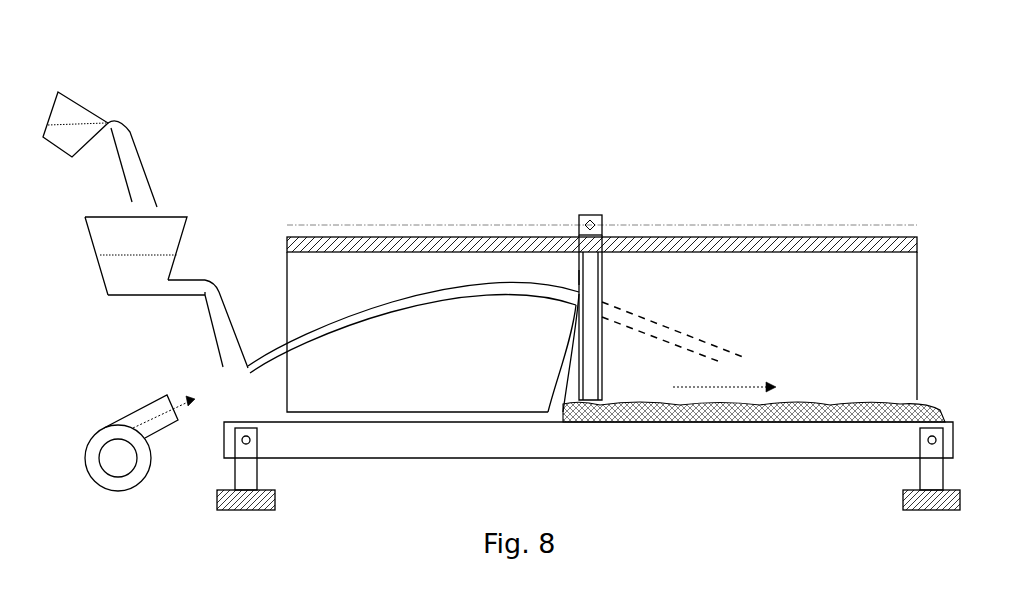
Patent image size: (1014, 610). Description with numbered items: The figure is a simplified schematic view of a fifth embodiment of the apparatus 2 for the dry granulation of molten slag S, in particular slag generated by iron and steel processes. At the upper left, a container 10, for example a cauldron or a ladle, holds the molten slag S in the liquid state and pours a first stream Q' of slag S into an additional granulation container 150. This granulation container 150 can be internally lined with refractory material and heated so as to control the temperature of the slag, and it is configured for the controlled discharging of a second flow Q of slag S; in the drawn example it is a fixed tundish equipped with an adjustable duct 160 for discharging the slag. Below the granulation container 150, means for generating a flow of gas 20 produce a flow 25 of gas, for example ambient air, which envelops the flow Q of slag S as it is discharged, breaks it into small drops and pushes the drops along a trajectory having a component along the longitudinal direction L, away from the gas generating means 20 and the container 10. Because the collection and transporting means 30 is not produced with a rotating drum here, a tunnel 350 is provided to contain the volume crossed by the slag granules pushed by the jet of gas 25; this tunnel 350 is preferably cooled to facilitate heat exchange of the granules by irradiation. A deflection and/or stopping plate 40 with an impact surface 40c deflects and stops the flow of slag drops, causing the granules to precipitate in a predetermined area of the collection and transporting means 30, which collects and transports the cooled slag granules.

The apparatus (fifth embodiment) 2 is at (807, 105).
The container 10 is at (83, 105).
The means for generating a flow of gas 20 is at (138, 488).
The flow of gas 25 is at (162, 415).
The means for collecting and transporting 30 is at (593, 458).
The deflection and/or stopping means 40 is at (590, 213).
The impact surface 40c is at (570, 275).
The granulation container 150 is at (185, 217).
The adjustable duct 160 is at (205, 282).
The tunnel 350 is at (635, 237).
The molten slag S is at (68, 141).
The flow of slag Q is at (180, 324).
The first stream of slag Q' is at (153, 149).
The longitudinal direction L is at (735, 373).